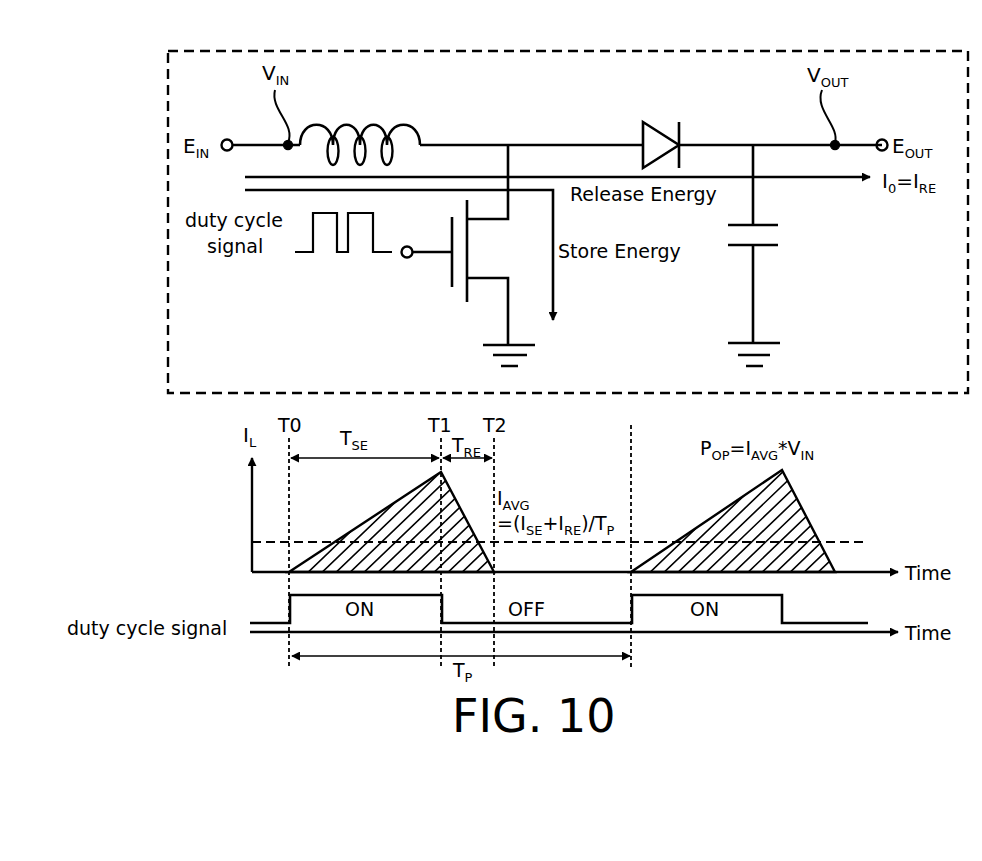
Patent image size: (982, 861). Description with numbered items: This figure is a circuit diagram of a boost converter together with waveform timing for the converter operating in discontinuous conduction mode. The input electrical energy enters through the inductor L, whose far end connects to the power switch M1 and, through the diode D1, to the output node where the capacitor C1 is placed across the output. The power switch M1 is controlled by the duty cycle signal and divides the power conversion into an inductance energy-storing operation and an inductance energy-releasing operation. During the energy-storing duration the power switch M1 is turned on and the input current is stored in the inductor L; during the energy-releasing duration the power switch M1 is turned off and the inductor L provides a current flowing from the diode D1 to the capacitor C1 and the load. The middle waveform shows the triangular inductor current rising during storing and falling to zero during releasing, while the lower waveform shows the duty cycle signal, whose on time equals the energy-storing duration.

The inductor L is at (360, 132).
The diode D1 is at (661, 131).
The power switch M1 is at (469, 255).
The capacitor C1 is at (770, 255).